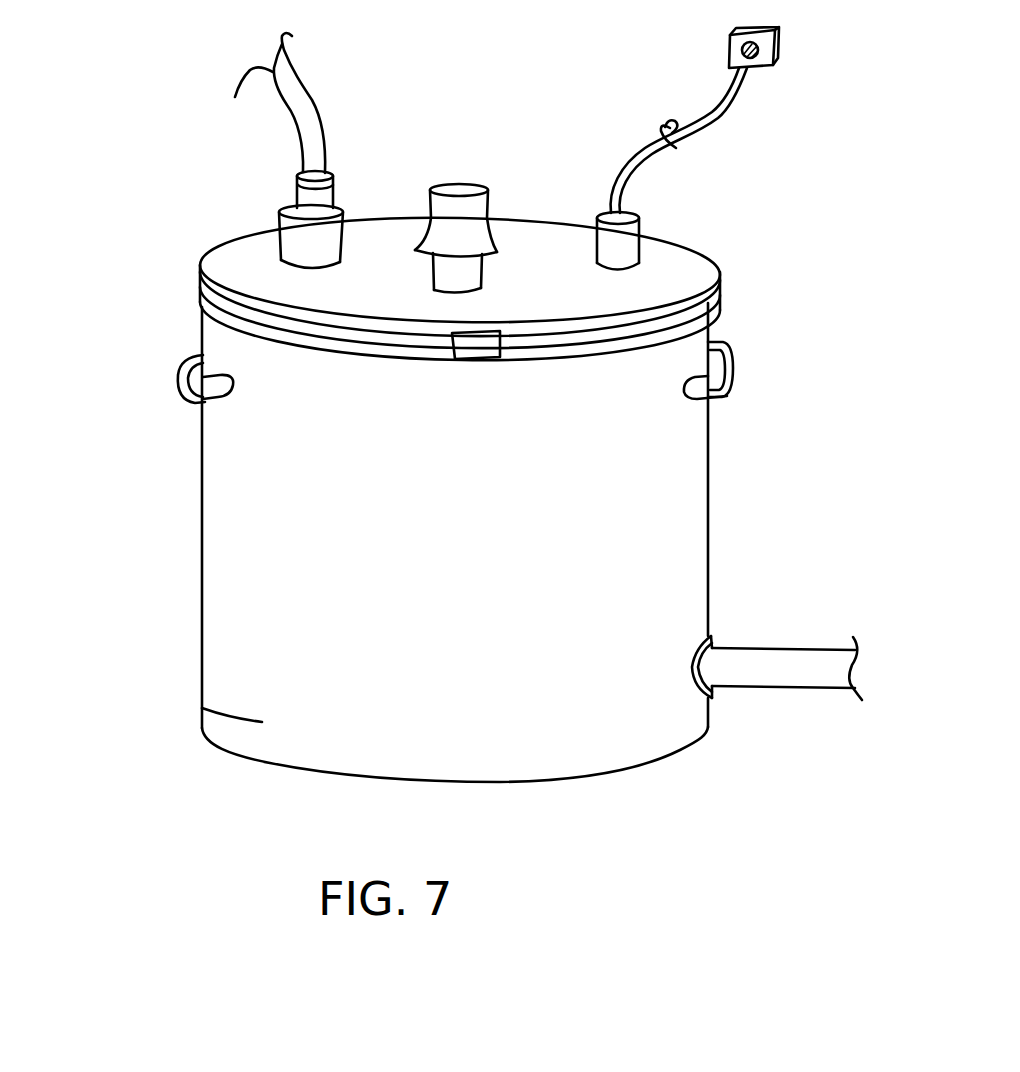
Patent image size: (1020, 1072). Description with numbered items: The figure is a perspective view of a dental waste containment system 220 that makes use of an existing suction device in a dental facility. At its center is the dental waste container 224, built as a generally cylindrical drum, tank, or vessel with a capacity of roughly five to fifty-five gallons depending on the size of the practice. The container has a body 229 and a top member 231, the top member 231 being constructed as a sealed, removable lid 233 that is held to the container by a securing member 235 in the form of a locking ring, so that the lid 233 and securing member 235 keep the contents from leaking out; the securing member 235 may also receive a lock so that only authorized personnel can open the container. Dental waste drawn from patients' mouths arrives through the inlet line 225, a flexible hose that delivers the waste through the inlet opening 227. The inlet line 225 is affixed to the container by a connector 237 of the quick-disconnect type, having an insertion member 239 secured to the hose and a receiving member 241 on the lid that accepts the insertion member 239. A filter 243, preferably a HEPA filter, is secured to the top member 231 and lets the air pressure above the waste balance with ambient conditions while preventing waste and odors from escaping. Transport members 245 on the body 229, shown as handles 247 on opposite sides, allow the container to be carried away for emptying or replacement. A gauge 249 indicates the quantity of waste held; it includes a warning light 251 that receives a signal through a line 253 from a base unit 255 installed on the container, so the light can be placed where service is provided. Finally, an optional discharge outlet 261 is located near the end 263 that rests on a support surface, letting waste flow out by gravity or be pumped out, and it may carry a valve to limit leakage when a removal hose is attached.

The dental waste containment system 220 is at (212, 833).
The dental waste container 224 is at (385, 542).
The inlet line 225 is at (297, 83).
The inlet opening 227 is at (258, 260).
The body 229 is at (500, 662).
The top member 231 is at (475, 274).
The lid 233 is at (713, 318).
The securing member 235 is at (203, 287).
The connector 237 is at (290, 150).
The insertion member 239 is at (310, 193).
The receiving member 241 is at (310, 242).
The filter 243 is at (463, 222).
The transport members 245 is at (470, 398).
The handles 247 is at (183, 378).
The gauge 249 is at (743, 148).
The warning light 251 is at (777, 45).
The line 253 is at (718, 105).
The base unit 255 is at (607, 242).
The discharge outlet 261 is at (787, 672).
The end 263 is at (202, 708).